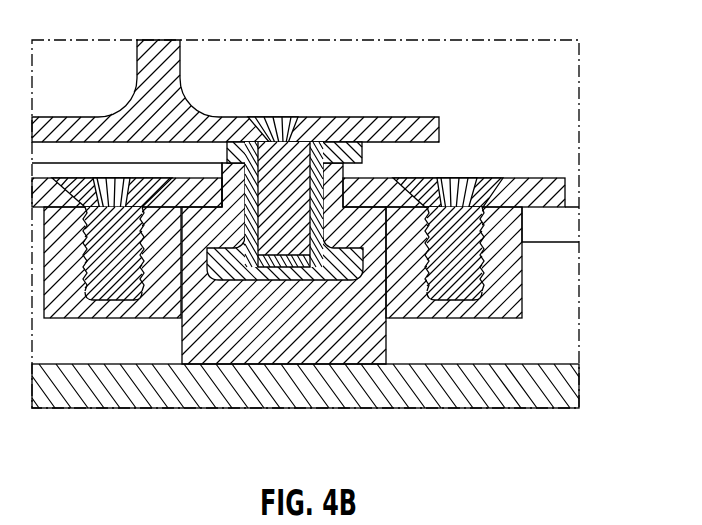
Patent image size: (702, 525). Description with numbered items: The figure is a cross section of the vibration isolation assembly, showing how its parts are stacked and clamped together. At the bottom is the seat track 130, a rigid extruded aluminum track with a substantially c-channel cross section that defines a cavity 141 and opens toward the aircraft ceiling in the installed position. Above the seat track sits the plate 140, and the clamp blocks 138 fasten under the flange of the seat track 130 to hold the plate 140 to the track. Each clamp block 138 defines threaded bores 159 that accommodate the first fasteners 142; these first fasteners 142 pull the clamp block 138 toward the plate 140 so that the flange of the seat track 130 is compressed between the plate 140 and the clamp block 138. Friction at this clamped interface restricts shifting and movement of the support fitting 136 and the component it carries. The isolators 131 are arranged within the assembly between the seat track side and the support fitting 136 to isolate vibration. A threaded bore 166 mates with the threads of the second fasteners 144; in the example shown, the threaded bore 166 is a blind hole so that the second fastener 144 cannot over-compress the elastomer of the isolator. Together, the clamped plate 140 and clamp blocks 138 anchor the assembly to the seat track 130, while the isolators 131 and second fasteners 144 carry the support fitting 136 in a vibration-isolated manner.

The seat track 130 is at (578, 390).
The isolators 131 is at (390, 336).
The support fitting 136 is at (182, 58).
The clamp blocks 138 is at (125, 318).
The plate 140 is at (531, 176).
The cavity 141 is at (565, 282).
The first fasteners 142 is at (453, 178).
The second fasteners 144 is at (285, 117).
The threaded bores 159 is at (477, 270).
The threaded bore 166 is at (302, 265).